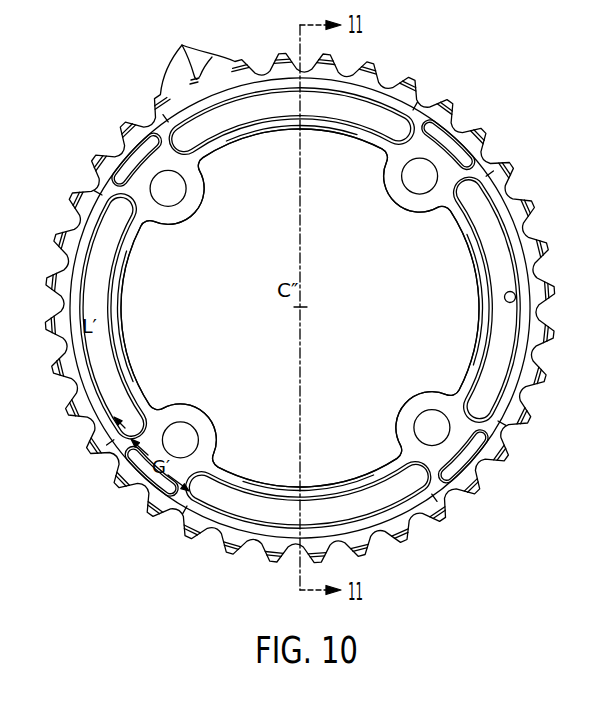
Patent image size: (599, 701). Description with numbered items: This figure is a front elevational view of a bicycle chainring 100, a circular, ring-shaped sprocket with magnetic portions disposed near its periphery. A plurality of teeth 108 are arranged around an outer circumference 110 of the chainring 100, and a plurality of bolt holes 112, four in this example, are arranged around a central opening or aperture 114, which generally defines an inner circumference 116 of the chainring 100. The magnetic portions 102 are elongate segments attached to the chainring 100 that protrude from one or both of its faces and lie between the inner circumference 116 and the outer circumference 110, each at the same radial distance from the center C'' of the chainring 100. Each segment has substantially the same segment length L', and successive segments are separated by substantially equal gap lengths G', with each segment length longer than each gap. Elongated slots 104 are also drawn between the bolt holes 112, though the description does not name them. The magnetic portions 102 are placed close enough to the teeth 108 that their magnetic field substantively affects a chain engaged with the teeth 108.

The chainring 100 is at (97, 96).
The magnetic portion 102 is at (382, 95).
The elongated slot 104 is at (266, 107).
The teeth 108 is at (182, 44).
The outer circumference 110 is at (503, 489).
The bolt holes 112 is at (168, 206).
The central opening or aperture 114 is at (123, 323).
The inner circumference 116 is at (165, 279).